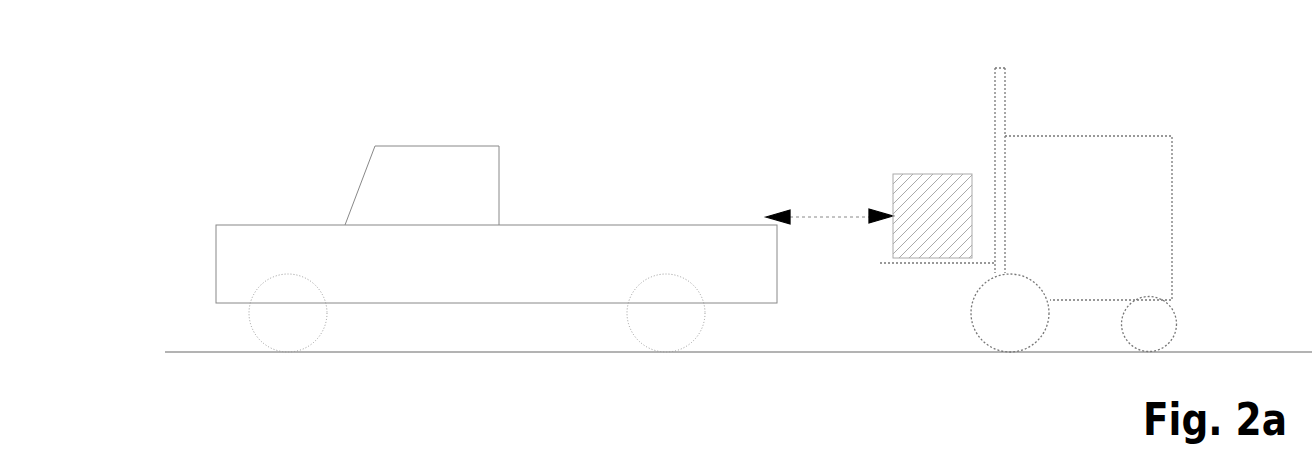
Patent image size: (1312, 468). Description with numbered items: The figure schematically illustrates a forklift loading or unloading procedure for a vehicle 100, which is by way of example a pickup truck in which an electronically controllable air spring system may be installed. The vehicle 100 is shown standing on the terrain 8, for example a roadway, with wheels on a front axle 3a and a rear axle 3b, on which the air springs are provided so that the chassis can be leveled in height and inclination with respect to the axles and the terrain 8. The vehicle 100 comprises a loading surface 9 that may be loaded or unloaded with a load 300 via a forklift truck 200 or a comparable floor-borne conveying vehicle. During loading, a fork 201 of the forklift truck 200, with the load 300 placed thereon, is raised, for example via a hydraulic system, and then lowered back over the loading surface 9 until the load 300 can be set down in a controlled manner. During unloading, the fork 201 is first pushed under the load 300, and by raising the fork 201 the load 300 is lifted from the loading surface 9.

The vehicle 100 is at (463, 193).
The loading surface 9 is at (645, 163).
The front axle 3a is at (203, 316).
The rear axle 3b is at (746, 331).
The terrain 8 is at (735, 352).
The load 300 is at (929, 148).
The forklift truck 200 is at (1047, 233).
The fork 201 is at (939, 290).